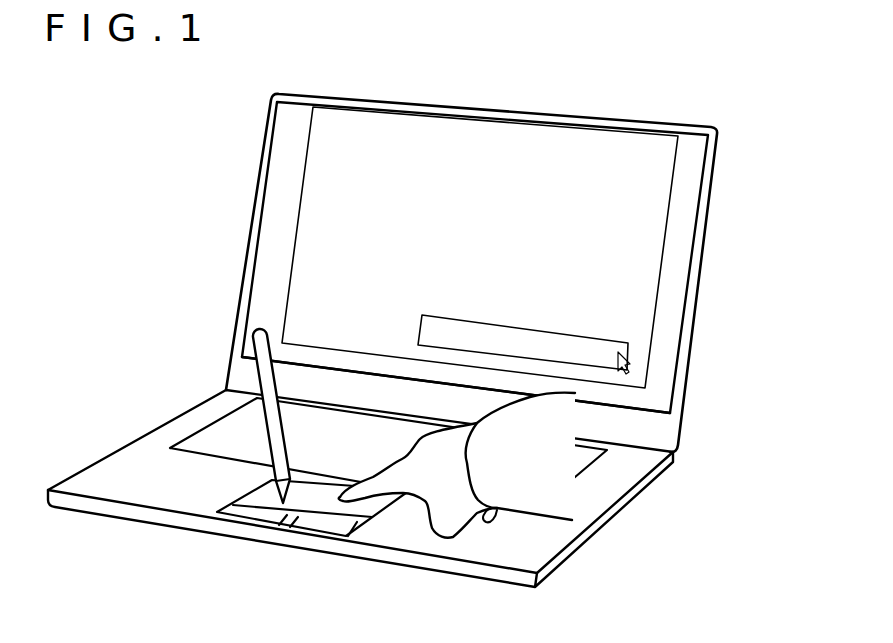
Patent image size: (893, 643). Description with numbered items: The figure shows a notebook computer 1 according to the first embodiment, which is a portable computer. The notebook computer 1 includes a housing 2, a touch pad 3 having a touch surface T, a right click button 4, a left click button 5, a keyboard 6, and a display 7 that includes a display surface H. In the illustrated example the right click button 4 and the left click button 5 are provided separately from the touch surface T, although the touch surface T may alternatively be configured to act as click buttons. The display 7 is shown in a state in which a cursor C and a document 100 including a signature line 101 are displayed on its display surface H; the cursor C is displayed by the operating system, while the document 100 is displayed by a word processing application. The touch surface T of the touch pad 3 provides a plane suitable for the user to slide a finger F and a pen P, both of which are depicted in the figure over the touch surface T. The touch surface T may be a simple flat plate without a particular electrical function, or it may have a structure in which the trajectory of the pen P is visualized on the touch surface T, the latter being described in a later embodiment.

The notebook computer 1 is at (719, 95).
The housing 2 is at (543, 555).
The touch pad 3 is at (343, 511).
The right click button 4 is at (307, 524).
The left click button 5 is at (265, 518).
The keyboard 6 is at (237, 425).
The display 7 is at (678, 303).
The document 100 is at (437, 125).
The signature line 101 is at (543, 337).
The display surface H is at (683, 265).
The cursor C is at (627, 363).
The pen P is at (258, 348).
The finger F is at (375, 477).
The touch surface T is at (313, 545).